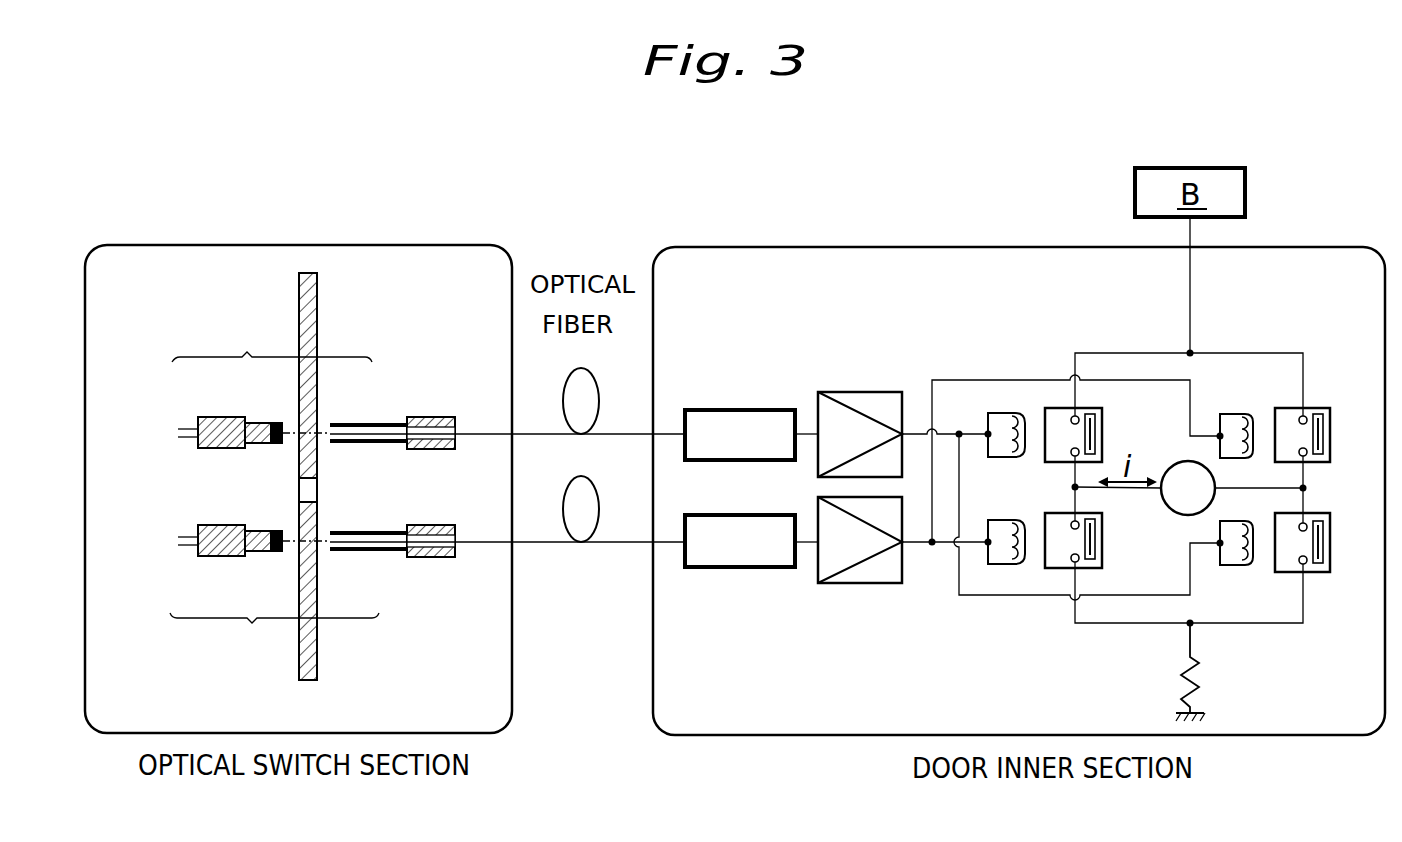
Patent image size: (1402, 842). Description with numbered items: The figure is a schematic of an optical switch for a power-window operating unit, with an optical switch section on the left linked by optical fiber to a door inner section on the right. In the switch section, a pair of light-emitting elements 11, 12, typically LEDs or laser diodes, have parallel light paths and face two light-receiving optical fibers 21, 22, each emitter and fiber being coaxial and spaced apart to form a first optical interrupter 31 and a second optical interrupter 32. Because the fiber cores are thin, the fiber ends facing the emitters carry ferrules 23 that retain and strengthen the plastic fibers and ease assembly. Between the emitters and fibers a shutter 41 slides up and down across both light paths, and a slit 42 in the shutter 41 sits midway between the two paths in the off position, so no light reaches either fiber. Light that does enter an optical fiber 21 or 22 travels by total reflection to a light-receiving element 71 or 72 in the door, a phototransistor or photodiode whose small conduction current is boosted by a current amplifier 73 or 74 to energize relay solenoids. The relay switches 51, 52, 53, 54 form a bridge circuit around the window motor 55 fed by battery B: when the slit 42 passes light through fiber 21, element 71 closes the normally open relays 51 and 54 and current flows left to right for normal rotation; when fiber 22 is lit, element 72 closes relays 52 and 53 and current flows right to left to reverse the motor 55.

The light-emitting element 11 is at (270, 429).
The light-emitting element 12 is at (258, 556).
The optical fiber 21 is at (410, 433).
The optical fiber 22 is at (388, 554).
The ferrule 23 is at (443, 452).
The optical interrupter 31 is at (272, 340).
The optical interrupter 32 is at (274, 639).
The shutter 41 is at (317, 313).
The slit 42 is at (312, 490).
The relay switch 51 is at (1090, 405).
The relay switch 52 is at (1330, 434).
The relay switch 53 is at (1102, 540).
The relay switch 54 is at (1330, 546).
The window motor 55 is at (1171, 509).
The light-receiving element 71 is at (723, 408).
The light-receiving element 72 is at (760, 569).
The current amplifier 73 is at (868, 392).
The current amplifier 74 is at (873, 583).